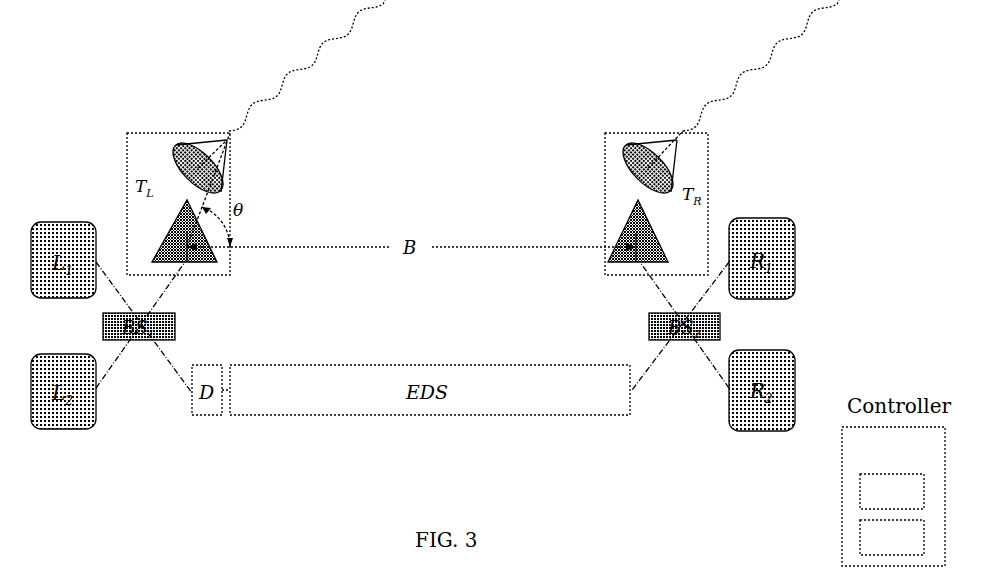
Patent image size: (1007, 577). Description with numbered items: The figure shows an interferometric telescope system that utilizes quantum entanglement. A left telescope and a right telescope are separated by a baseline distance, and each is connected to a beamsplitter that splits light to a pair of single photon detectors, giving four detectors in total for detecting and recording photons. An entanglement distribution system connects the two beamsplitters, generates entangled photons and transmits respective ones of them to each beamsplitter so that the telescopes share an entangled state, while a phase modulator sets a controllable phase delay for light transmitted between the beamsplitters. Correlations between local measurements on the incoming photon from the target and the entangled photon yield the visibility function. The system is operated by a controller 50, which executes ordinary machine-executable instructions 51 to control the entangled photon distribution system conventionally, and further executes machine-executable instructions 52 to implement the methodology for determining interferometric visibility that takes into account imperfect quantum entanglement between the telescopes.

The controller 50 is at (893, 496).
The machine-executable instructions 51 is at (892, 491).
The machine-executable instructions 52 is at (892, 537).